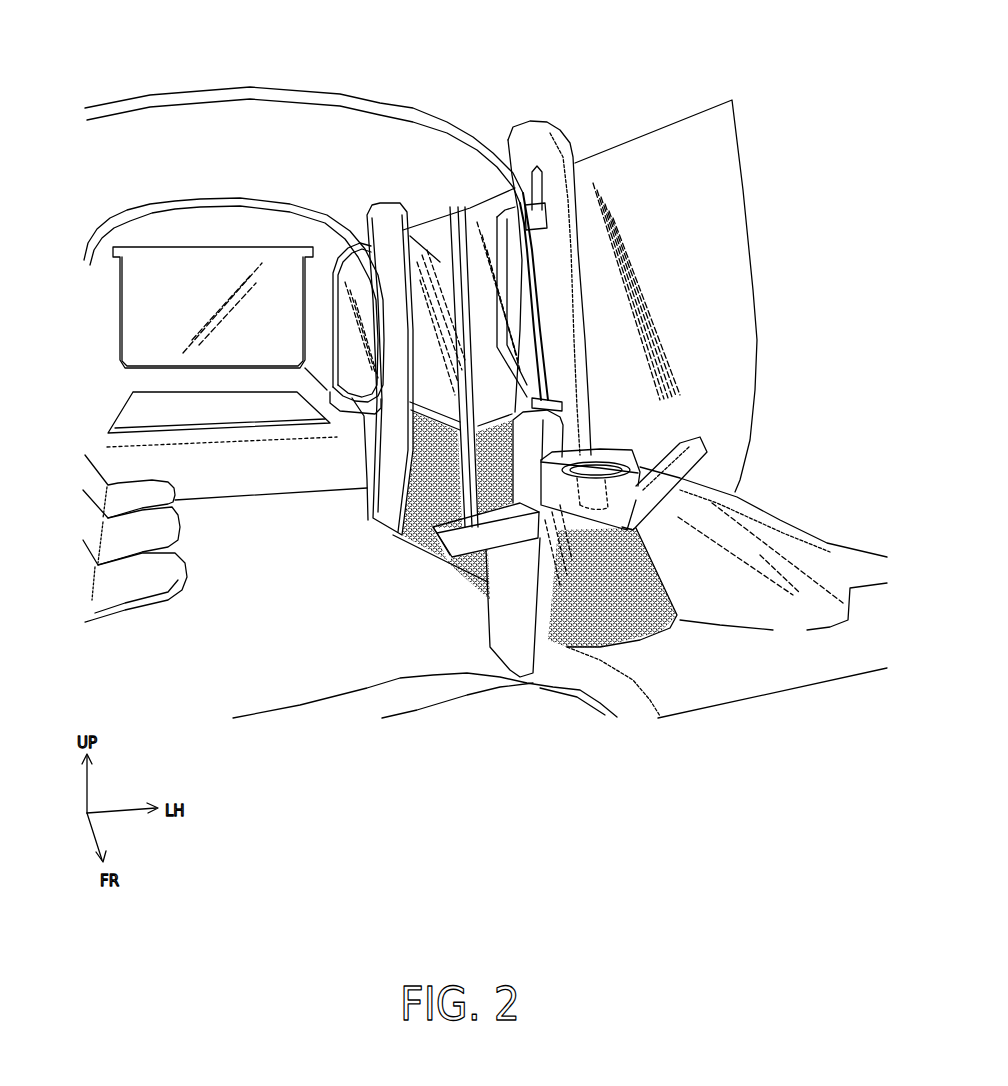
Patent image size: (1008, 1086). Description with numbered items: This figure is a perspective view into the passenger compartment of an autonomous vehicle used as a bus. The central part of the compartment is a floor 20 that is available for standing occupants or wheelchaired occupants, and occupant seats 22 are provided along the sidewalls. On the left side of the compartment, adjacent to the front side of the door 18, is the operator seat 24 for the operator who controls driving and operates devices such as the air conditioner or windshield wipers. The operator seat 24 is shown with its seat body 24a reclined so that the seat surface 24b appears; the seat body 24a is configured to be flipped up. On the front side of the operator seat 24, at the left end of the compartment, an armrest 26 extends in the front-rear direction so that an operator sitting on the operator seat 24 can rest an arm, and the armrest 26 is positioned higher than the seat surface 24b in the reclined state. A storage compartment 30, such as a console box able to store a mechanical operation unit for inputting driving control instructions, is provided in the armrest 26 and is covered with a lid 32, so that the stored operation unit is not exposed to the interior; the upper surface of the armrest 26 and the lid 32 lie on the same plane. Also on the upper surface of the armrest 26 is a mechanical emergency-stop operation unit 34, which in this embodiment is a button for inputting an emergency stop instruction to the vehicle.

The door 18 is at (465, 204).
The floor 20 is at (113, 556).
The occupant seats 22 is at (111, 378).
The operator seat 24 is at (498, 587).
The seat body 24a is at (468, 495).
The seat surface 24b is at (408, 490).
The armrest 26 is at (611, 639).
The storage compartment 30 is at (590, 430).
The lid 32 is at (601, 446).
The emergency-stop operation unit 34 is at (678, 428).